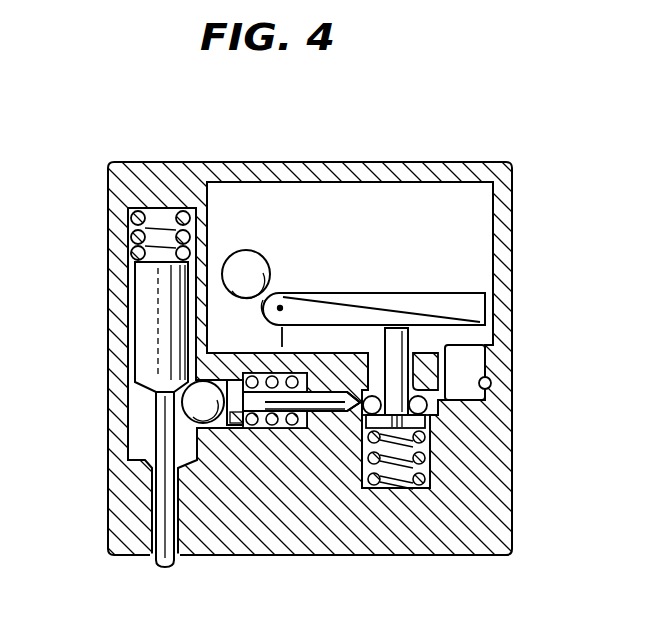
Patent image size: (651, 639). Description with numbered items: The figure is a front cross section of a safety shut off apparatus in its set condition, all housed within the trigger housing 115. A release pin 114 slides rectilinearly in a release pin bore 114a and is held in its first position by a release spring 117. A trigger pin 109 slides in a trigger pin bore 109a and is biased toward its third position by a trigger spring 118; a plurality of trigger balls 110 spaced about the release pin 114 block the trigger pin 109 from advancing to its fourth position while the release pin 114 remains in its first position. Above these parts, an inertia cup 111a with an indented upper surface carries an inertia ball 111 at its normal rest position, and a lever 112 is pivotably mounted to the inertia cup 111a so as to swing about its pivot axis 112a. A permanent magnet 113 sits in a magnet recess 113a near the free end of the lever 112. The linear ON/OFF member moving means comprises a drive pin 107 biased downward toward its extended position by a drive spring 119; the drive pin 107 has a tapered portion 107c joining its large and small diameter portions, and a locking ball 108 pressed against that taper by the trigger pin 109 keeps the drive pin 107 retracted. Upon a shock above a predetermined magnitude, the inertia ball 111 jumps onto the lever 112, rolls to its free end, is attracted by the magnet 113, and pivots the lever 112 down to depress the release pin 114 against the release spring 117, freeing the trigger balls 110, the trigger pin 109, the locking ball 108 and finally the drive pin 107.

The drive pin 107 is at (140, 297).
The tapered portion 107c is at (185, 398).
The locking ball 108 is at (218, 430).
The trigger pin 109 is at (247, 430).
The trigger pin bore 109a is at (340, 414).
The trigger balls 110 is at (427, 490).
The inertia ball 111 is at (252, 257).
The inertia cup 111a is at (217, 330).
The lever 112 is at (343, 310).
The pivot axis 112a is at (281, 307).
The permanent magnet 113 is at (478, 360).
The magnet recess 113a is at (490, 388).
The release pin 114 is at (408, 325).
The release pin bore 114a is at (430, 432).
The trigger housing 115 is at (513, 222).
The release spring 117 is at (388, 484).
The trigger spring 118 is at (302, 424).
The drive spring 119 is at (128, 225).